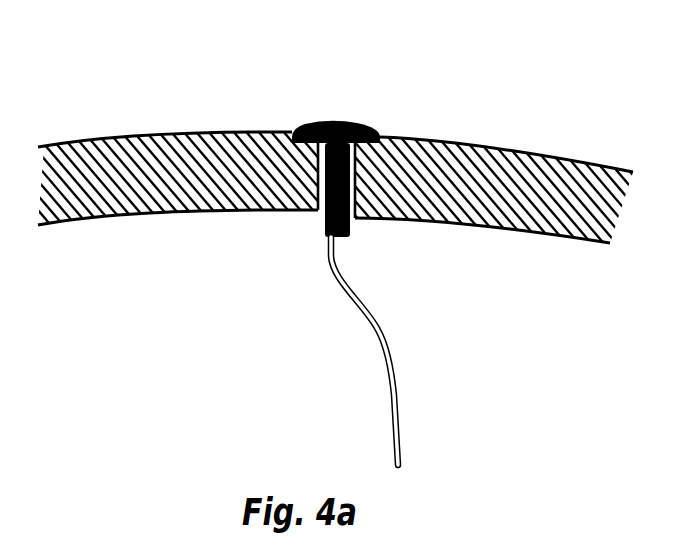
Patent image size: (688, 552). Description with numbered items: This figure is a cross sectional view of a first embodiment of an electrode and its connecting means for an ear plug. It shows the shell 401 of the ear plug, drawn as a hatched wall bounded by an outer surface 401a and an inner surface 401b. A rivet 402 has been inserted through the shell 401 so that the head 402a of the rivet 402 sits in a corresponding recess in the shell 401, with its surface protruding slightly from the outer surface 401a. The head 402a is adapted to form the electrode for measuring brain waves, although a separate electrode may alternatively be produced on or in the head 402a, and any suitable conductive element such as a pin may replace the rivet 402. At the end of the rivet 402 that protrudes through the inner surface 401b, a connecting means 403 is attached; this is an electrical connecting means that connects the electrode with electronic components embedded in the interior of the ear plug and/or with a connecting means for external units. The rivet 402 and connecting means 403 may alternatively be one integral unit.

The shell 401 is at (428, 200).
The outer surface 401a is at (203, 132).
The inner surface 401b is at (555, 237).
The rivet 402 is at (303, 148).
The head 402a is at (340, 135).
The connecting means 403 is at (380, 338).